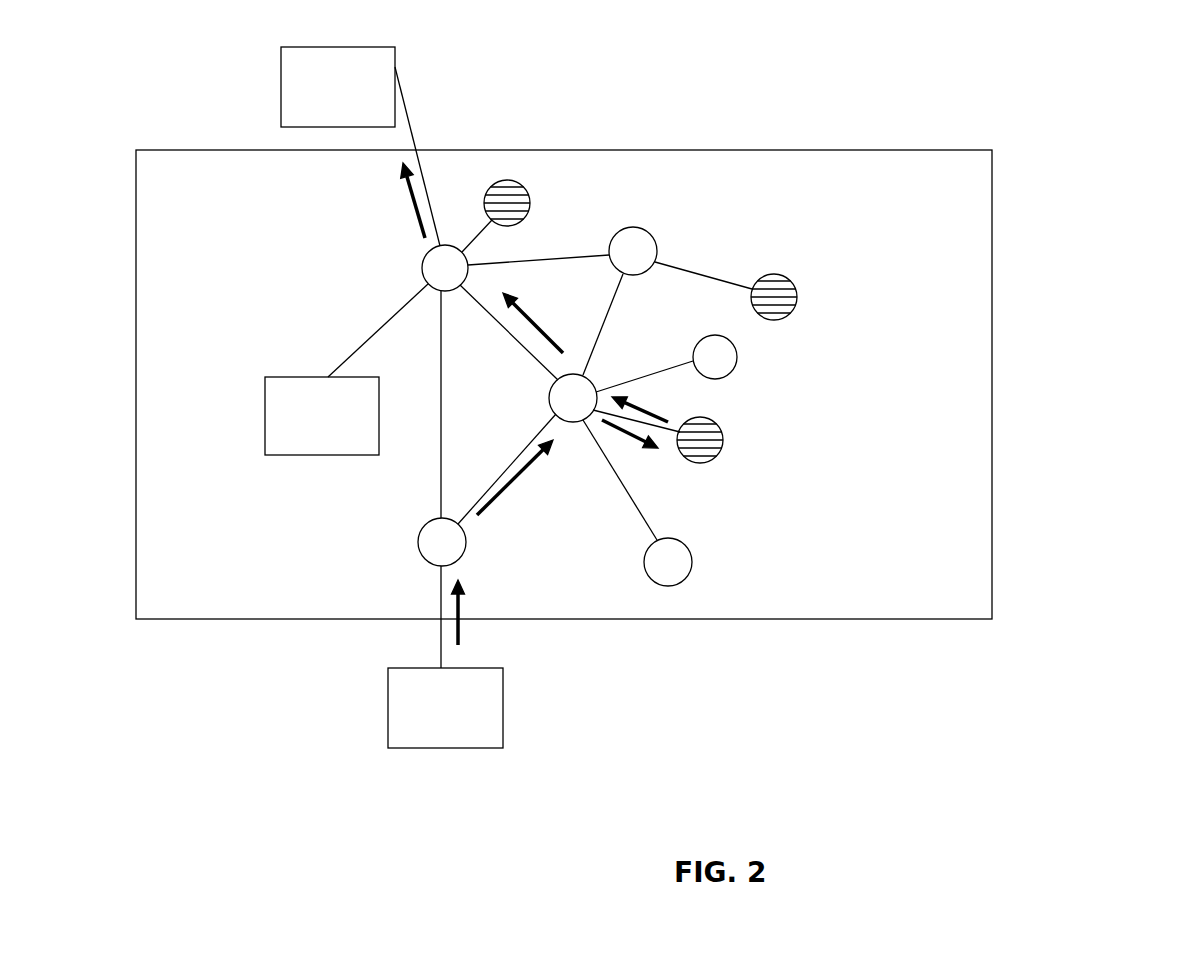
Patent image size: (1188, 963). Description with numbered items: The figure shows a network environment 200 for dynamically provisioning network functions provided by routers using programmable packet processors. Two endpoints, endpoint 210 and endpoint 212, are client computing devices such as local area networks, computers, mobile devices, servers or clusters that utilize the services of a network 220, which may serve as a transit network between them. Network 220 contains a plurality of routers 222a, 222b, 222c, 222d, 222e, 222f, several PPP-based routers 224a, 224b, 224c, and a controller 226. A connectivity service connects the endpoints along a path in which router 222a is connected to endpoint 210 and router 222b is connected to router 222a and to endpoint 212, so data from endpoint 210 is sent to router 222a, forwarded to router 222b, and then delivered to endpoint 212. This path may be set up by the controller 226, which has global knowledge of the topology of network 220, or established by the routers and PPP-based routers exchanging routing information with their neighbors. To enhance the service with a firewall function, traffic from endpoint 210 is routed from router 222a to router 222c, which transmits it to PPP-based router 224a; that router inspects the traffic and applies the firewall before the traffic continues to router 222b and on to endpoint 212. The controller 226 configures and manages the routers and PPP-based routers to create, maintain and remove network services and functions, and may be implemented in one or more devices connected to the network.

The network environment 200 is at (1173, 31).
The endpoint 210 is at (503, 712).
The endpoint 212 is at (335, 47).
The network 220 is at (826, 150).
The router 222a is at (418, 546).
The router 222b is at (431, 288).
The router 222c is at (593, 378).
The router 222d is at (651, 234).
The router 222e is at (686, 543).
The router 222f is at (738, 354).
The PPP-based router 224a is at (720, 436).
The PPP-based router 224b is at (531, 204).
The PPP-based router 224c is at (798, 297).
The controller 226 is at (346, 369).